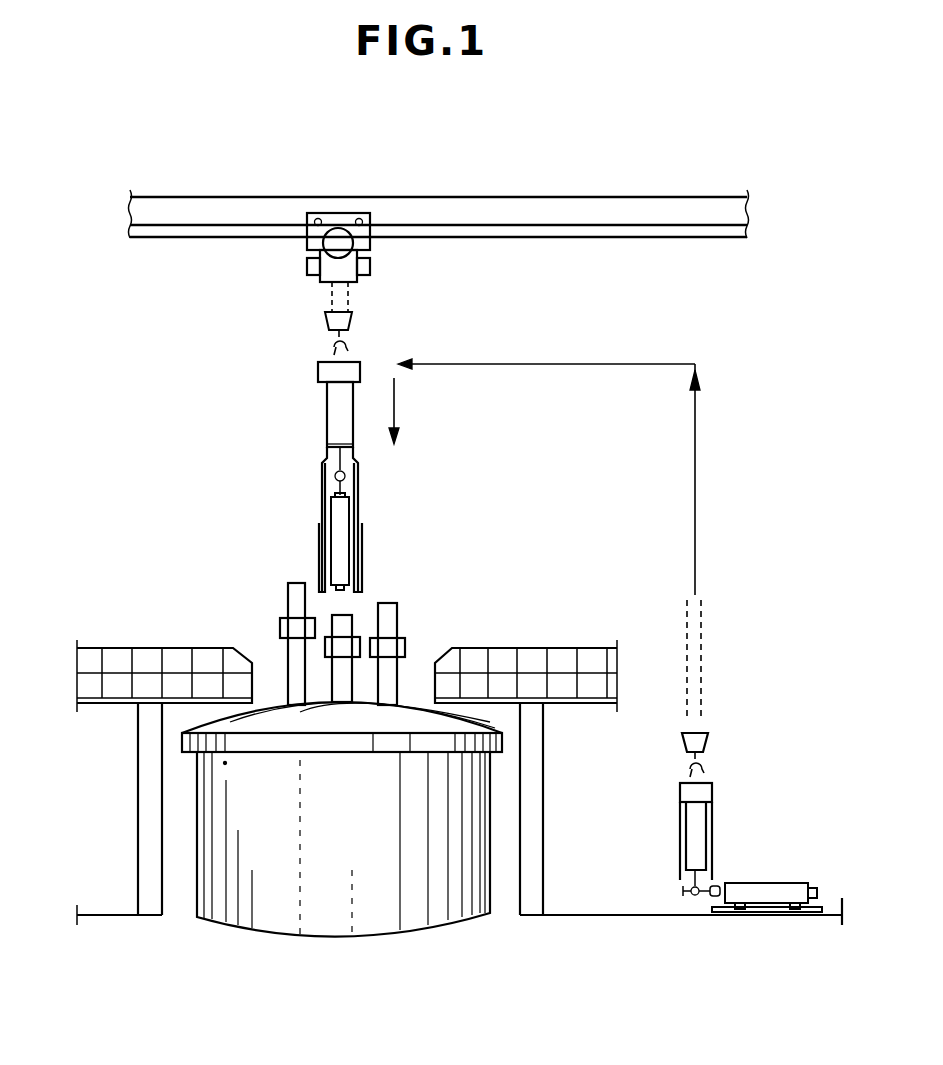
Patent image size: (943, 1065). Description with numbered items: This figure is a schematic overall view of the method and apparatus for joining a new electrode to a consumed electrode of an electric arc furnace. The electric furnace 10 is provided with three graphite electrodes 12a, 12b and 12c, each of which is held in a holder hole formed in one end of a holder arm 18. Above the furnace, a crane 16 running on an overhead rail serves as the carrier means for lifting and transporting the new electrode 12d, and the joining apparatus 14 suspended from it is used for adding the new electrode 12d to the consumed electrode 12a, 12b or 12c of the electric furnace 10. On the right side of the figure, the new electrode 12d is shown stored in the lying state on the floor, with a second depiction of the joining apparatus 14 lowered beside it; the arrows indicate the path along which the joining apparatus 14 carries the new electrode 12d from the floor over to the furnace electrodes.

The electric furnace 10 is at (262, 636).
The electrode 12a is at (287, 598).
The electrode 12b is at (352, 622).
The electrode 12c is at (396, 620).
The new electrode 12d is at (350, 540).
The joining apparatus 14 is at (320, 425).
The crane 16 is at (306, 250).
The holder arm 18 is at (398, 648).